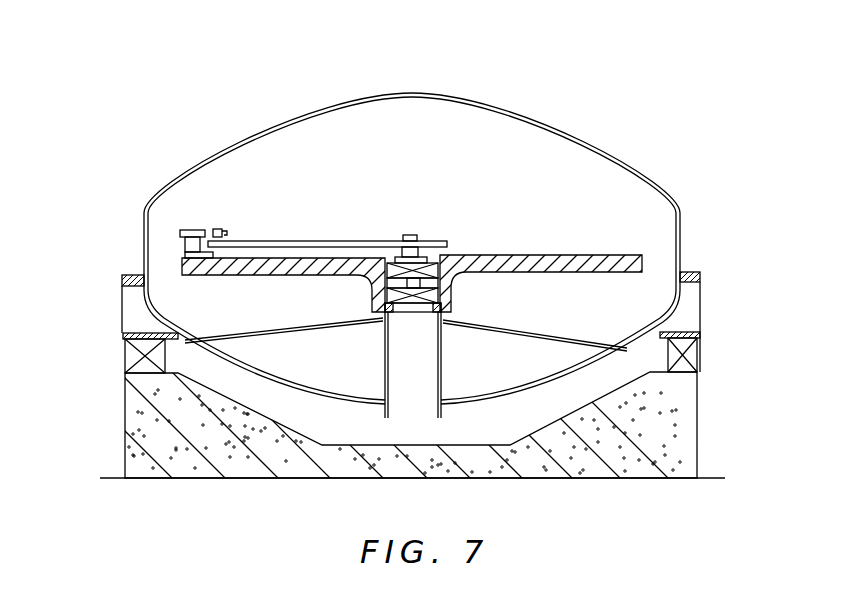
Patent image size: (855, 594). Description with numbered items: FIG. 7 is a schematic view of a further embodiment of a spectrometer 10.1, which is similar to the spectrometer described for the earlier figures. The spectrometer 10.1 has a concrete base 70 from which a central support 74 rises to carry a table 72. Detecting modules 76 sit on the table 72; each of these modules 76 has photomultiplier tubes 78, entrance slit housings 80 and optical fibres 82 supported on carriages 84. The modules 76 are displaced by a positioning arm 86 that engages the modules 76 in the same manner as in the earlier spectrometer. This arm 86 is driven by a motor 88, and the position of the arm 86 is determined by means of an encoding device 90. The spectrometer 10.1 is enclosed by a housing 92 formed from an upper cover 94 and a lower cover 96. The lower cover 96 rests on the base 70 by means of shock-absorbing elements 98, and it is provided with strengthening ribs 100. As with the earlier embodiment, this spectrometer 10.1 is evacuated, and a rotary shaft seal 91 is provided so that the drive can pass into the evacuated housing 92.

The spectrometer 10.1 is at (598, 92).
The concrete base 70 is at (588, 467).
The table 72 is at (547, 262).
The central support 74 is at (445, 363).
The detecting modules 76 is at (225, 220).
The photomultiplier tubes 78 is at (192, 230).
The entrance slit housings 80 is at (226, 234).
The optical fibres 82 is at (213, 225).
The carriages 84 is at (182, 256).
The positioning arm 86 is at (353, 243).
The motor 88 is at (450, 257).
The encoding device 90 is at (443, 290).
The rotary shaft seal 91 is at (403, 236).
The housing 92 is at (672, 182).
The upper cover 94 is at (622, 158).
The lower cover 96 is at (488, 398).
The shock-absorbing elements 98 is at (698, 354).
The strengthening ribs 100 is at (573, 341).